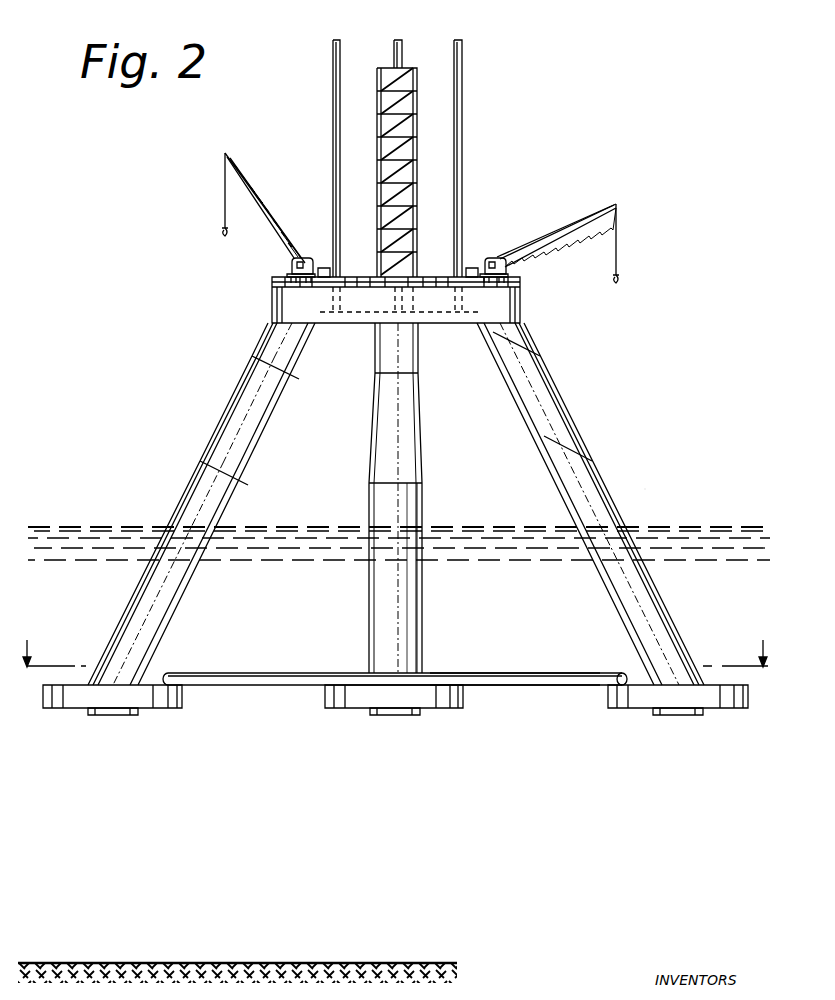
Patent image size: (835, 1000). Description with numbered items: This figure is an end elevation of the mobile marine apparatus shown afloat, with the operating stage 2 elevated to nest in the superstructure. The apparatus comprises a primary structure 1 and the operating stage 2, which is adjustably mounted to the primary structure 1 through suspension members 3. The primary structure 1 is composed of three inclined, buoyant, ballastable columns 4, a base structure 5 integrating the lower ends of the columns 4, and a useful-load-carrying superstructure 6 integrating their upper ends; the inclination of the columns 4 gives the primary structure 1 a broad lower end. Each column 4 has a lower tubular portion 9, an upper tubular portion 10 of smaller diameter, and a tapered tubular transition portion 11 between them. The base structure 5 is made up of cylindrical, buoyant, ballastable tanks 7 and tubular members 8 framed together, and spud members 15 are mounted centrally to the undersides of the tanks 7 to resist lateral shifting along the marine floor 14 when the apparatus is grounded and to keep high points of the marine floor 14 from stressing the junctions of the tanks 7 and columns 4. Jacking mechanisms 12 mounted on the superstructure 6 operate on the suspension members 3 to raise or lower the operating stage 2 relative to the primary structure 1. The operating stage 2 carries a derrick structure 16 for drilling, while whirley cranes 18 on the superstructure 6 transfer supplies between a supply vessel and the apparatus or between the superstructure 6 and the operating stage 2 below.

The primary structure 1 is at (645, 490).
The operating stage 2 is at (430, 325).
The suspension members 3 is at (333, 48).
The columns 4 is at (393, 504).
The base structure 5 is at (505, 668).
The useful-load-carrying superstructure 6 is at (520, 301).
The tanks 7 is at (62, 708).
The tubular members 8 is at (272, 673).
The lower tubular portion 9 is at (178, 596).
The upper tubular portion 10 is at (310, 352).
The tapered tubular transition portion 11 is at (262, 422).
The jacking mechanisms 12 is at (325, 268).
The marine floor 14 is at (143, 962).
The spud members 15 is at (130, 715).
The derrick structure 16 is at (417, 85).
The whirley cranes 18 is at (272, 240).